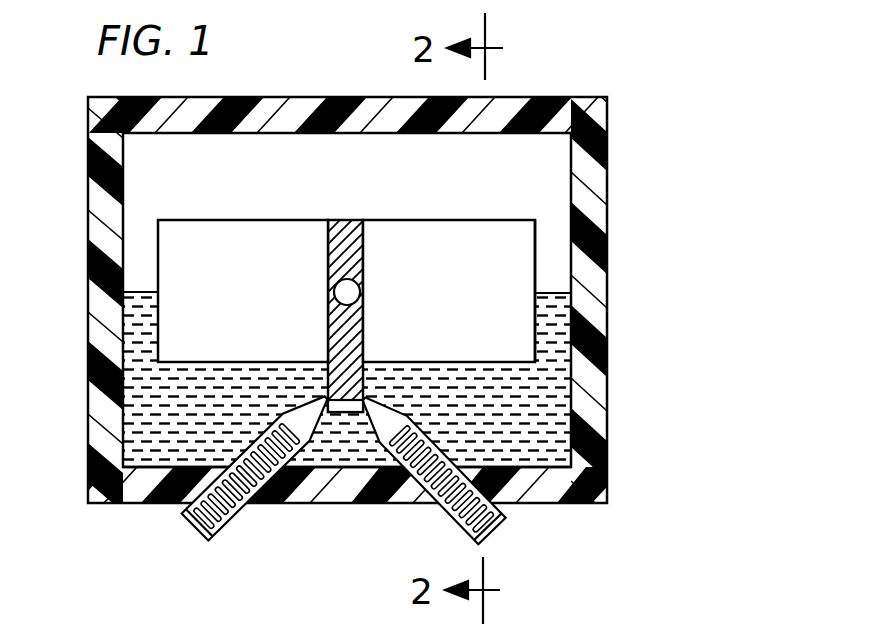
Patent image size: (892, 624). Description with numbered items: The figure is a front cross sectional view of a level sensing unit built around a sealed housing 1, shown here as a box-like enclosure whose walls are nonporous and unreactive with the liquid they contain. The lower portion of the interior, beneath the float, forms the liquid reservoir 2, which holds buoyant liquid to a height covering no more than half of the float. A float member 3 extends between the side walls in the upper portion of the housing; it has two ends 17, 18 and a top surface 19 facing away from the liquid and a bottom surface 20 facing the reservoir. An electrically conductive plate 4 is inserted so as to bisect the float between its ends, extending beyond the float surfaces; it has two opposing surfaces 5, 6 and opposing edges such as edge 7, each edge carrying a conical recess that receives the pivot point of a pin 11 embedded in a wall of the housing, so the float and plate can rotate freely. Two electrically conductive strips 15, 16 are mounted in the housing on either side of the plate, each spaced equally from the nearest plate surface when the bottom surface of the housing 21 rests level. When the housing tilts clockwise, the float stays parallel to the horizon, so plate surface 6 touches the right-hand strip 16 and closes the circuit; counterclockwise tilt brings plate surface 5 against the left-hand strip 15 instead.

The sealed housing 1 is at (523, 103).
The liquid reservoir 2 is at (163, 445).
The float member 3 is at (273, 249).
The electrically conductive plate 4 is at (355, 406).
The plate surface 5 is at (330, 367).
The plate surface 6 is at (363, 385).
The plate edge 7 is at (347, 233).
The pin 11 is at (358, 290).
The electrically conductive strip 15 is at (233, 525).
The electrically conductive strip 16 is at (497, 532).
The float end 17 is at (160, 313).
The float end 18 is at (535, 258).
The top surface of float 19 is at (515, 220).
The bottom surface of float 20 is at (522, 362).
The bottom surface of housing 21 is at (385, 500).